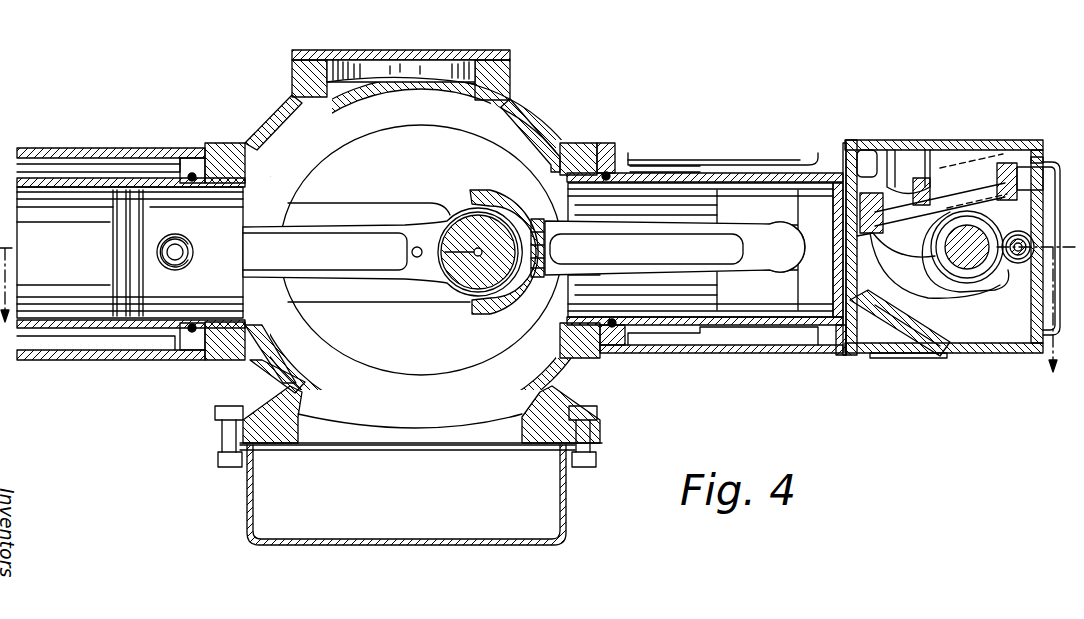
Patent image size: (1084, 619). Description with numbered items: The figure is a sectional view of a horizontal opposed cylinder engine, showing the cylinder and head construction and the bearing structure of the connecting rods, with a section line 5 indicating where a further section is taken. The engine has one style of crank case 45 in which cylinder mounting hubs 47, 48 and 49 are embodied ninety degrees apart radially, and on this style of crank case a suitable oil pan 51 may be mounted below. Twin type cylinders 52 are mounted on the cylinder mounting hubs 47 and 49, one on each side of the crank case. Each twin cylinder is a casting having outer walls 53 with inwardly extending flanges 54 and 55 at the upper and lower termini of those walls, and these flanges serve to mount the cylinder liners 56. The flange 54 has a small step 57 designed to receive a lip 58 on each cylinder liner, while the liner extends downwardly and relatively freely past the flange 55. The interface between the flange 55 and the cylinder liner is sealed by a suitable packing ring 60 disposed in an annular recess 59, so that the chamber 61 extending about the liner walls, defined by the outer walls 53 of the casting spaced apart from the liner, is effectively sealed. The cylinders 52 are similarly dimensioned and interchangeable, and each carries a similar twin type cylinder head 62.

The crank case 45 is at (283, 101).
The cylinder mounting hub 47 is at (585, 140).
The cylinder mounting hub 48 is at (513, 72).
The cylinder mounting hub 49 is at (222, 141).
The oil pan 51 is at (572, 490).
The twin type cylinder 52 is at (107, 146).
The outer wall 53 is at (28, 150).
The flange 54 is at (808, 150).
The flange 55 is at (640, 165).
The cylinder liner 56 is at (690, 170).
The step 57 is at (841, 332).
The lip 58 is at (845, 356).
The annular recess 59 is at (190, 172).
The packing ring 60 is at (192, 181).
The chamber 61 is at (128, 162).
The cylinder head 62 is at (977, 139).
The section line 5- 5 is at (537, 322).